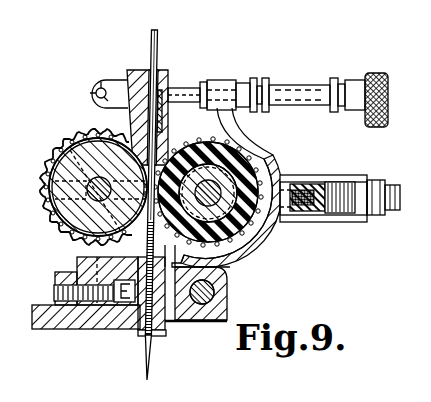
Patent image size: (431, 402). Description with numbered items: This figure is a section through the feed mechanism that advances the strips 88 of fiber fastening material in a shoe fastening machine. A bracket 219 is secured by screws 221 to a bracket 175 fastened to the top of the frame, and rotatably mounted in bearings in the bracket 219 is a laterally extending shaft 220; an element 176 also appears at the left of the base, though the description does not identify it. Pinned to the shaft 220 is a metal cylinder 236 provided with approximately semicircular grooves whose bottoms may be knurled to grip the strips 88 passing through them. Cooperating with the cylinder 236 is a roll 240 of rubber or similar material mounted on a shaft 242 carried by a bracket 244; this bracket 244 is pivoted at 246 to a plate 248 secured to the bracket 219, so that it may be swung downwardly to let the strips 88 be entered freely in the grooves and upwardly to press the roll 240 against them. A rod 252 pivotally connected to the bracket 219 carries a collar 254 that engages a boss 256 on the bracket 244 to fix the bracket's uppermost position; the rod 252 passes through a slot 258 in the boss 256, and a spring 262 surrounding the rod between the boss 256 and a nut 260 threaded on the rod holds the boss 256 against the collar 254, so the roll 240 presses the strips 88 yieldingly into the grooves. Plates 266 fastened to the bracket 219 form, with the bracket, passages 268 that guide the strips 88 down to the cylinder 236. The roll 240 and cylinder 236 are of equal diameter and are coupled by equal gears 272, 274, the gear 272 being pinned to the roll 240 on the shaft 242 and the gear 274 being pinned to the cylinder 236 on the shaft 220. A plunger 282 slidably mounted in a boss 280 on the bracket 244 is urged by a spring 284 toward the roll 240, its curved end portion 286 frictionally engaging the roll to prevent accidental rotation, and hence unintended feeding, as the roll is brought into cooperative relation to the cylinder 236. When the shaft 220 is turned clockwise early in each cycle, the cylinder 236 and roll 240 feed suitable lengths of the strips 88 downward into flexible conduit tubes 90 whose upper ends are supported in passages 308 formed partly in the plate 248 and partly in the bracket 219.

The strips of fiber fastening material 88 is at (152, 37).
The flexible conduit tubes 90 is at (148, 338).
The bracket 175 is at (50, 332).
The serrated clamp block 176 is at (54, 298).
The bracket 219 is at (124, 332).
The shaft 220 is at (62, 178).
The screws 221 is at (102, 320).
The metal cylinder 236 is at (68, 153).
The roll 240 is at (243, 271).
The shaft 242 is at (276, 225).
The bracket 244 is at (274, 241).
The pivot 246 is at (196, 322).
The plate 248 is at (201, 324).
The rod 252 is at (178, 92).
The collar 254 is at (214, 82).
The boss 256 is at (239, 83).
The slot 258 is at (240, 118).
The nut 260 is at (378, 73).
The spring 262 is at (334, 88).
The plates 266 is at (166, 74).
The passages 268 is at (163, 108).
The gear 272 is at (227, 148).
The gear 274 is at (78, 135).
The boss 280 is at (357, 223).
The plunger 282 is at (300, 186).
The spring 284 is at (341, 184).
The curved end portion 286 is at (252, 262).
The passages 308 is at (158, 338).